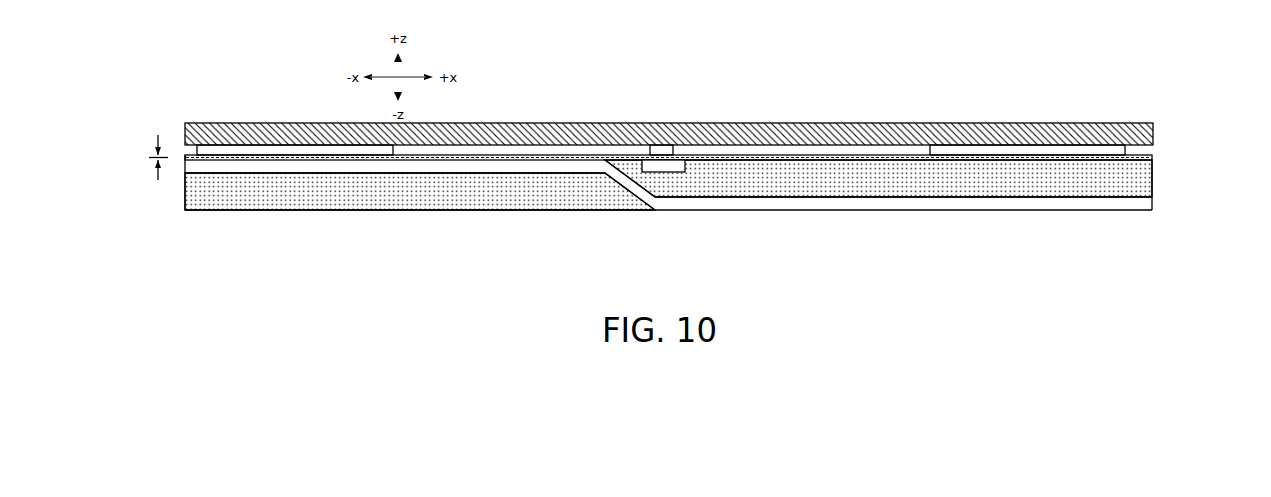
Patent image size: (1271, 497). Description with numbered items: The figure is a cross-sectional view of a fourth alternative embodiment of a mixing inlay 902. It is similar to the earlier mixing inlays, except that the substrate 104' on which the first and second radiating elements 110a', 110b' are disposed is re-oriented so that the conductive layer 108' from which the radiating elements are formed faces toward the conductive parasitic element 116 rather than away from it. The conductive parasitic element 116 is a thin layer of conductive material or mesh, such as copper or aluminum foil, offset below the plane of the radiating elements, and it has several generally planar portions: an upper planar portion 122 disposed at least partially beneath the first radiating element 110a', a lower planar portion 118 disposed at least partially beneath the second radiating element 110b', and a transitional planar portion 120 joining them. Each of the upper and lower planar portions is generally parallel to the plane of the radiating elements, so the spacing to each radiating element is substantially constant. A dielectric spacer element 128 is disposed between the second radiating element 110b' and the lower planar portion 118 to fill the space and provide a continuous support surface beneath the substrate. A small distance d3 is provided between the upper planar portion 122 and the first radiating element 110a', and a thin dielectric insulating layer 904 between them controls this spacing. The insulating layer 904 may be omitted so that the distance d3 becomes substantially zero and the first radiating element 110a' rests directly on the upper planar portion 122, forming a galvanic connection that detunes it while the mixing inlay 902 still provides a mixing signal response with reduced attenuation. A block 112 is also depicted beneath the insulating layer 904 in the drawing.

The mixing inlay 902 is at (696, 108).
The dielectric insulating layer 904 is at (702, 169).
The substrate 104' is at (684, 120).
The conductive layer 108' is at (723, 128).
The first radiating element 110a' is at (668, 125).
The second radiating element 110b' is at (801, 116).
The component block 112 is at (686, 175).
The conductive parasitic element 116 is at (723, 213).
The lower planar portion 118 is at (943, 205).
The transitional planar portion 120 is at (640, 188).
The upper planar portion 122 is at (427, 163).
The dielectric spacer element 128 is at (900, 179).
The distance d3 is at (145, 157).